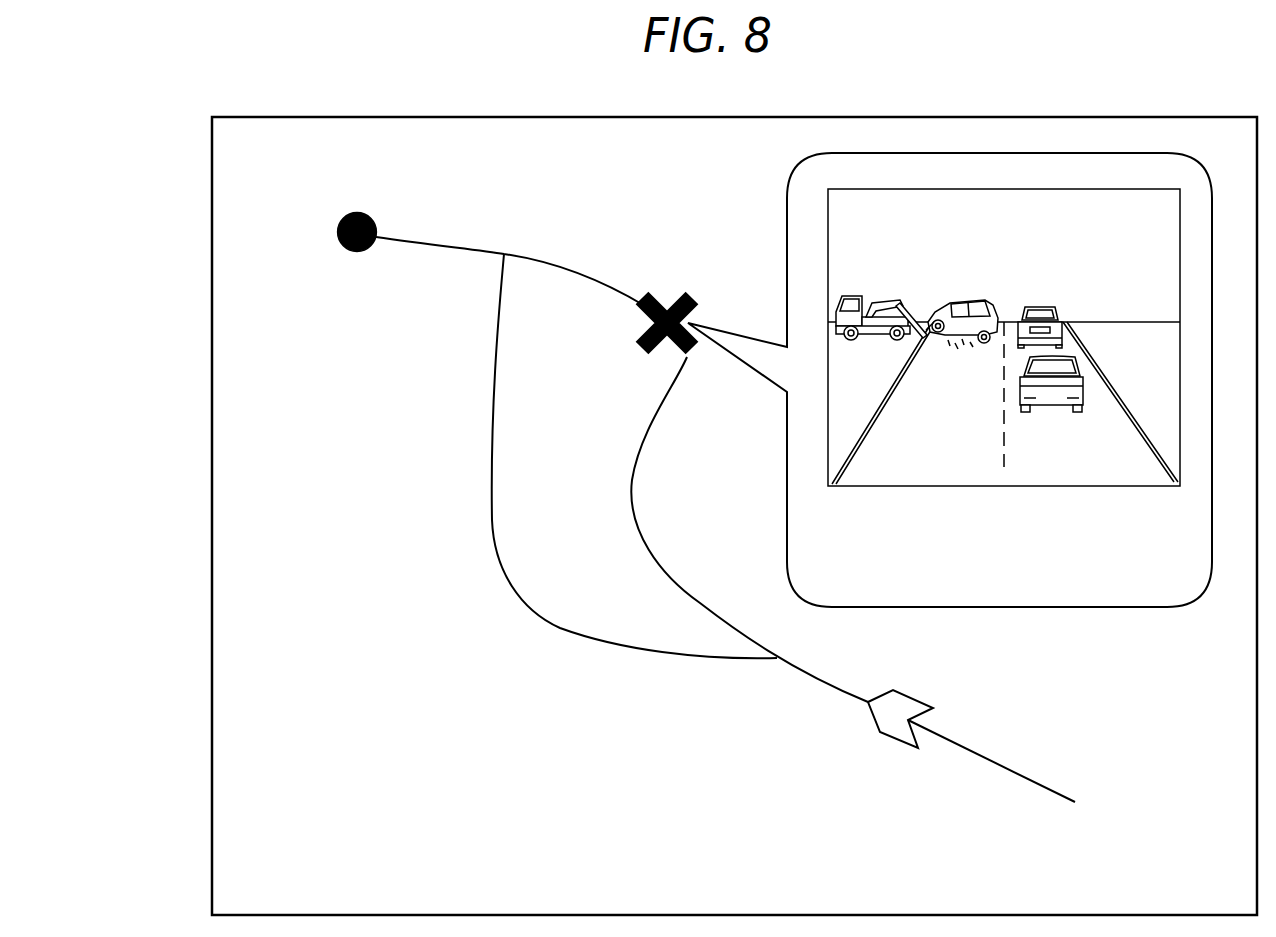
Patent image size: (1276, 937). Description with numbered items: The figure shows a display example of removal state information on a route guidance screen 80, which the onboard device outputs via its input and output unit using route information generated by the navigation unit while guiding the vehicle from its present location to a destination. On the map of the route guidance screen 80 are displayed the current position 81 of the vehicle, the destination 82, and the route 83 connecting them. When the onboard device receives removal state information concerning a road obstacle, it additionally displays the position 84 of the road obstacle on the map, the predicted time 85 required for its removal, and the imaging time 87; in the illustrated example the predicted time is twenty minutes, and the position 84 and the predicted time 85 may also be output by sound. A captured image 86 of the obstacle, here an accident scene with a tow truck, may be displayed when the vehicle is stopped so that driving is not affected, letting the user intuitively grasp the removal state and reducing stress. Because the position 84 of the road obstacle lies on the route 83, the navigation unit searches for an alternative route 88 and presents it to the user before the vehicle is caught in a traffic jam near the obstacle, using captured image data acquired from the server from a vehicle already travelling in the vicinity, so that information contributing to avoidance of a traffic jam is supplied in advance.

The route guidance screen 80 is at (212, 257).
The current position 81 is at (915, 698).
The destination 82 is at (353, 210).
The route 83 is at (703, 605).
The position of the road obstacle 84 is at (668, 298).
The predicted time 85 is at (847, 518).
The captured image 86 is at (828, 222).
The imaging time 87 is at (1097, 573).
The alternative route 88 is at (492, 455).